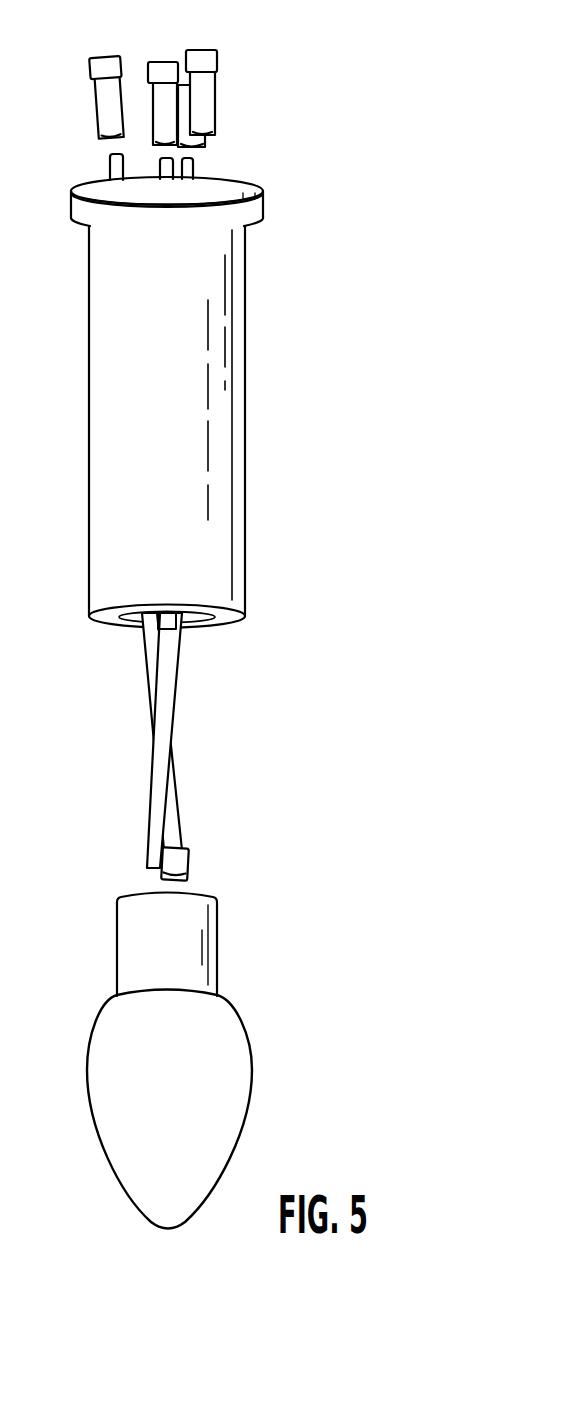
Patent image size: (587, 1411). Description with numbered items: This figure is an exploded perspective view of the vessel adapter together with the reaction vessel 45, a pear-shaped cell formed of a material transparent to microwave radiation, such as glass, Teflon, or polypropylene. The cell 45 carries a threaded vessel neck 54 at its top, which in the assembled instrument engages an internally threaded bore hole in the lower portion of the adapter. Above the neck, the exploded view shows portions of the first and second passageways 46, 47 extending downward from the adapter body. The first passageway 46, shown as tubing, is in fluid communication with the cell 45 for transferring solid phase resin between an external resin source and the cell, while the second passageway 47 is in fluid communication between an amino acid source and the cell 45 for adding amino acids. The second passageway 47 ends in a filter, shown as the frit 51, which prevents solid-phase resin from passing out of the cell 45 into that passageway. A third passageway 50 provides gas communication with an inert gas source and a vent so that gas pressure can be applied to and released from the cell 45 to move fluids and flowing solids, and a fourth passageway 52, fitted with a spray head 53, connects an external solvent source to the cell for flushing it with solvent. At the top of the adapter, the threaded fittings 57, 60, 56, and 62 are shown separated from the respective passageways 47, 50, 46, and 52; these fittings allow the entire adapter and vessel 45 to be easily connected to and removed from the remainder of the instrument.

The reaction vessel 45 is at (182, 1113).
The first passageway 46 is at (172, 668).
The second passageway 47 is at (112, 170).
The third passageway 50 is at (168, 180).
The frit 51 is at (180, 855).
The fourth passageway 52 is at (187, 180).
The spray head 53 is at (166, 620).
The vessel neck 54 is at (181, 958).
The threaded fitting 56 is at (210, 58).
The threaded fitting 57 is at (102, 108).
The threaded fitting 60 is at (160, 72).
The threaded fitting 62 is at (207, 133).